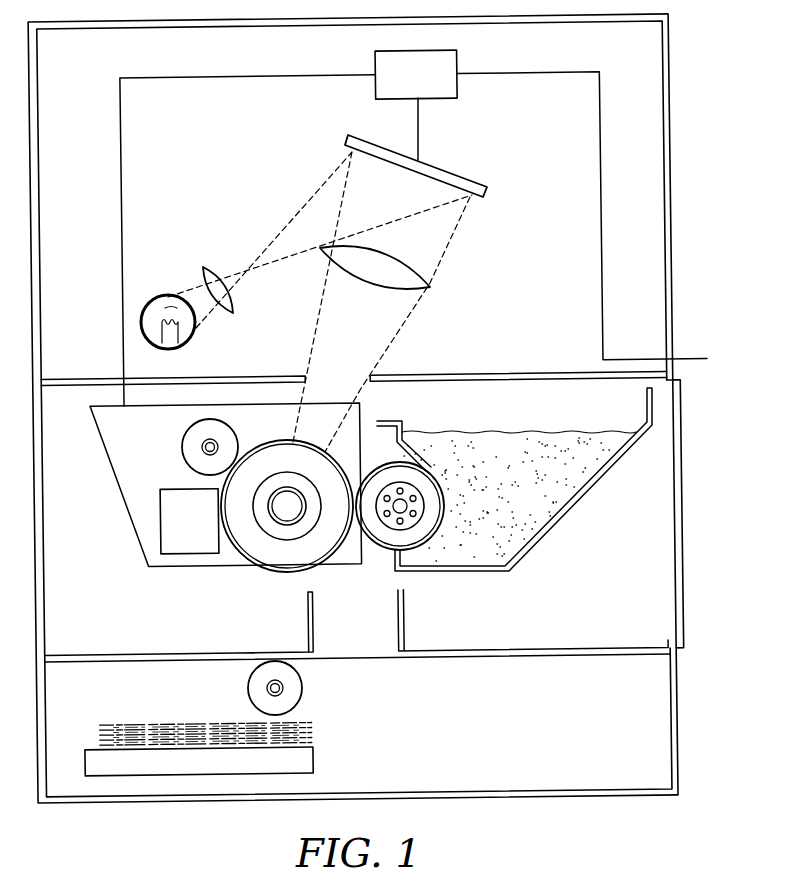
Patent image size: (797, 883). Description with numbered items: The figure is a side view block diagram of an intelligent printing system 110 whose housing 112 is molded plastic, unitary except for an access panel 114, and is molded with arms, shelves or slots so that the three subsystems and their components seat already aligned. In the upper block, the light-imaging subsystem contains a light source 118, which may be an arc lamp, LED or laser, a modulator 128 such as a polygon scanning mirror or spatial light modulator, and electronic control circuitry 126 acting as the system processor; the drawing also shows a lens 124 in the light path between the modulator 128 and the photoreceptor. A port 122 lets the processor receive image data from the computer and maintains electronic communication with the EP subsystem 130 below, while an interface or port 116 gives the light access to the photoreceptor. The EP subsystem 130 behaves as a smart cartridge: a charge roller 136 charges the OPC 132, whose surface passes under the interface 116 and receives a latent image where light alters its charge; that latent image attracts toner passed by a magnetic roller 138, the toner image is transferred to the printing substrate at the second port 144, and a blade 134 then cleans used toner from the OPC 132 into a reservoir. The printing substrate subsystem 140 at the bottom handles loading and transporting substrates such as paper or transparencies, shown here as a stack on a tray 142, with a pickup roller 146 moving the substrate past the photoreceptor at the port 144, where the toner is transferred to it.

The printing system 110 is at (646, 834).
The housing 112 is at (478, 797).
The access panel 114 is at (683, 582).
The interface or port 116 is at (373, 368).
The light source 118 is at (142, 318).
The port 122 is at (690, 360).
The projection lens 124 is at (430, 289).
The electronic control circuitry 126 is at (458, 62).
The modulator 128 is at (468, 176).
The EP subsystem 130 is at (660, 445).
The OPC 132 is at (272, 562).
The blade 134 is at (189, 553).
The charge roller 136 is at (182, 447).
The magnetic roller 138 is at (386, 538).
The printing substrate subsystem 140 is at (667, 715).
The paper tray 142 is at (313, 762).
The port 144 is at (393, 620).
The pickup roller 146 is at (302, 688).